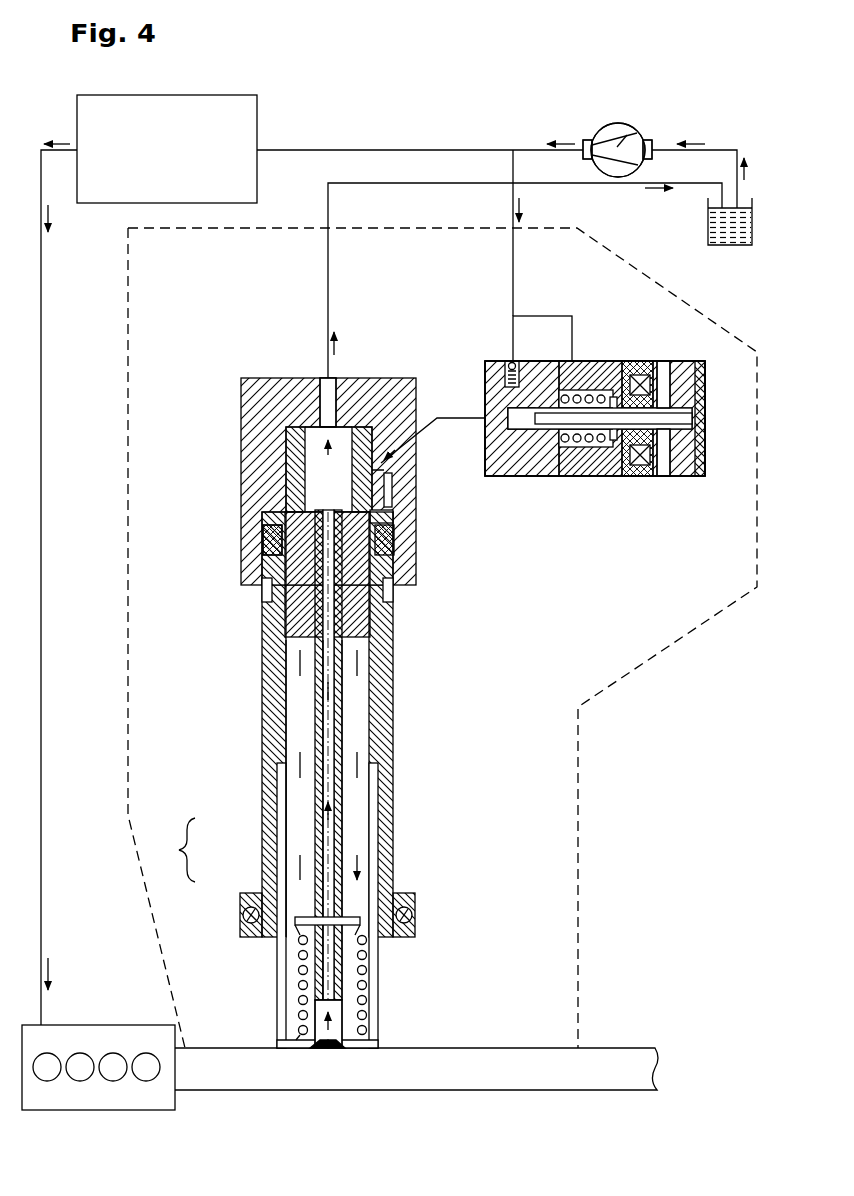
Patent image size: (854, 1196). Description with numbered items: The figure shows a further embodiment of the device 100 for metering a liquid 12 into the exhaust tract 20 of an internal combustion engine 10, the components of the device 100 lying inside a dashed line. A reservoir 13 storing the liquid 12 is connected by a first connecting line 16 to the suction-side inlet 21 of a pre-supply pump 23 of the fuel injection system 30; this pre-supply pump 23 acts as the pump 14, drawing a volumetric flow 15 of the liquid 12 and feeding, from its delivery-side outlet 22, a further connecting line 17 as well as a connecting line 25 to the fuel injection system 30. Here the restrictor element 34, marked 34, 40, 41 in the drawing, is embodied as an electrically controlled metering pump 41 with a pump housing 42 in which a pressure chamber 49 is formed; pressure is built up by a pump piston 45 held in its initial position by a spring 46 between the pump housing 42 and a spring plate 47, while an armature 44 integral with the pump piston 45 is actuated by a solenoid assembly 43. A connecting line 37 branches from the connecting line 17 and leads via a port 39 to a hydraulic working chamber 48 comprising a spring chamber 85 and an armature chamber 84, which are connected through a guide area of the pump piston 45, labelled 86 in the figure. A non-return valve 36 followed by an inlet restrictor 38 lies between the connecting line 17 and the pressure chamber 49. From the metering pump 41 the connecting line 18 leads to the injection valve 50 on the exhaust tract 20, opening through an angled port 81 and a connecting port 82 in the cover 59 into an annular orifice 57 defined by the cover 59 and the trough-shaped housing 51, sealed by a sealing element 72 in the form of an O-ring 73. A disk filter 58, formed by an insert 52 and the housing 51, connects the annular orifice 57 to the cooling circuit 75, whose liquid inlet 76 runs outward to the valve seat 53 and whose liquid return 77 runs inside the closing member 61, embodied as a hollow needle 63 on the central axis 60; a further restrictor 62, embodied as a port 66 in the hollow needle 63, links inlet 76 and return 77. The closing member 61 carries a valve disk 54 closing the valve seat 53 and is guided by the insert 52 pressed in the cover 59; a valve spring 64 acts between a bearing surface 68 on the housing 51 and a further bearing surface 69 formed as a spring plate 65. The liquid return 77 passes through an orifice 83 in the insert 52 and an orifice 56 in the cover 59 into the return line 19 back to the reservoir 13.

The internal combustion engine 10 is at (166, 1032).
The liquid 12 is at (744, 250).
The reservoir 13 is at (712, 245).
The pump 14 is at (598, 124).
The volumetric flow 15 is at (627, 135).
The first connecting line 16 is at (730, 150).
The further connecting line 17 is at (513, 274).
The connecting line 18 is at (437, 418).
The return line 19 is at (328, 212).
The exhaust tract 20 is at (505, 1092).
The suction-side inlet 21 is at (646, 142).
The delivery-side outlet 22 is at (587, 142).
The pre-supply pump 23 is at (618, 150).
The further connecting line 25 is at (397, 149).
The fuel injection system 30 is at (244, 120).
The restrictor element 34 is at (589, 421).
The non-return valve 36 is at (508, 363).
The connecting line 37 is at (541, 316).
The inlet restrictor 38 is at (502, 390).
The port 39 is at (576, 376).
The solenoid valve 40 is at (595, 418).
The electrically controlled metering pump 41 is at (595, 418).
The pump housing 42 is at (552, 462).
The solenoid assembly 43 is at (667, 397).
The armature 44 is at (678, 375).
The pump piston 45 is at (685, 420).
The spring 46 is at (575, 474).
The spring plate 47 is at (612, 392).
The hydraulic working chamber 48 is at (641, 476).
The pressure chamber 49 is at (520, 430).
The injection valve 50 is at (316, 738).
The housing 51 is at (385, 668).
The insert 52 is at (290, 620).
The valve seat 53 is at (314, 1050).
The valve disk 54 is at (335, 1050).
The orifice 56 is at (326, 385).
The annular orifice 57 is at (384, 518).
The disk filter 58 is at (278, 592).
The cover 59 is at (270, 488).
The central axis 60 is at (372, 620).
The closing member 61 is at (342, 748).
The further restrictor 62 is at (318, 988).
The hollow needle 63 is at (342, 792).
The valve spring 64 is at (360, 987).
The spring plate 65 is at (355, 940).
The port 66 is at (328, 1022).
The bearing surface 68 is at (290, 1030).
The further bearing surface 69 is at (295, 940).
The sealing element 72 is at (265, 542).
The O-ring 73 is at (272, 540).
The cooling circuit 75 is at (176, 850).
The liquid inlet 76 is at (290, 876).
The liquid return 77 is at (323, 833).
The angled port 81 is at (404, 453).
The connecting port 82 is at (388, 488).
The orifice 83 is at (300, 430).
The armature chamber 84 is at (689, 463).
The spring chamber 85 is at (593, 474).
The air gap 86 is at (662, 460).
The device 100 is at (611, 734).